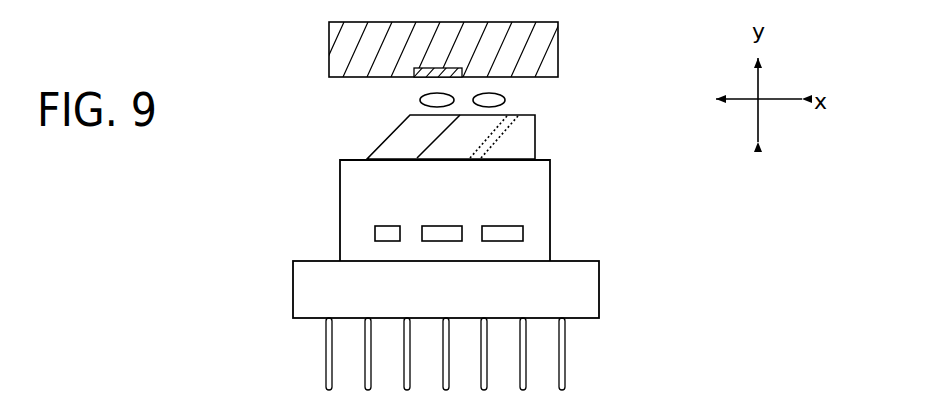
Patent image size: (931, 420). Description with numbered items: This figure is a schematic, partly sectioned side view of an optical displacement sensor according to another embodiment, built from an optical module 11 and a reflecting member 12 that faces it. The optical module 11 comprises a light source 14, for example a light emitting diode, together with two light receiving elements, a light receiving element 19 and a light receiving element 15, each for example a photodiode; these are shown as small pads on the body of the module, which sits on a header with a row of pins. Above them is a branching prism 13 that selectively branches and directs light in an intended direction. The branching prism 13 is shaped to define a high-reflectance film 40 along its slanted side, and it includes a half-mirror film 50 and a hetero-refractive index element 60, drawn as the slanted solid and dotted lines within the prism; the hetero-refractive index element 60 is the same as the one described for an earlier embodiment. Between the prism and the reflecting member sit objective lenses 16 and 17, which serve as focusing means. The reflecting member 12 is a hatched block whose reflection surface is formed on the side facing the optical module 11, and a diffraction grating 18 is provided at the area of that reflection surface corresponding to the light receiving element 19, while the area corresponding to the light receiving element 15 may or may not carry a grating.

The optical module 11 is at (473, 233).
The reflecting member 12 is at (455, 65).
The branching prism 13 is at (437, 160).
The light source 14 is at (376, 233).
The light receiving element 15 is at (553, 242).
The objective lens 16 is at (421, 100).
The objective lens 17 is at (495, 98).
The diffraction grating 18 is at (418, 74).
The light receiving element 19 is at (441, 236).
The high-reflectance film 40 is at (382, 143).
The half-mirror film 50 is at (426, 150).
The hetero-refractive index element 60 is at (487, 142).